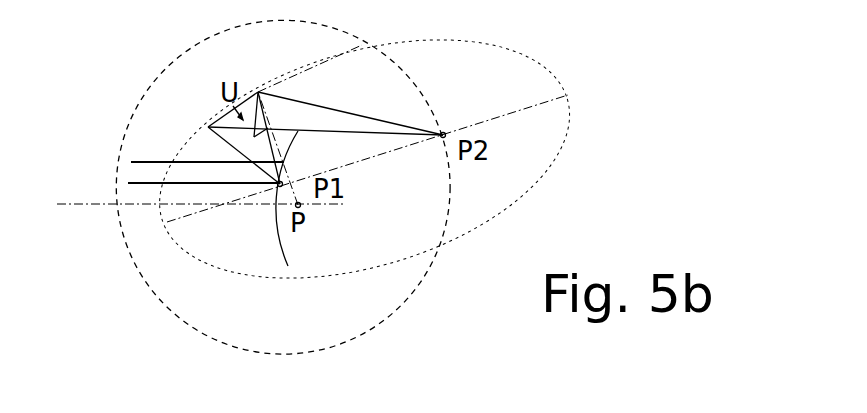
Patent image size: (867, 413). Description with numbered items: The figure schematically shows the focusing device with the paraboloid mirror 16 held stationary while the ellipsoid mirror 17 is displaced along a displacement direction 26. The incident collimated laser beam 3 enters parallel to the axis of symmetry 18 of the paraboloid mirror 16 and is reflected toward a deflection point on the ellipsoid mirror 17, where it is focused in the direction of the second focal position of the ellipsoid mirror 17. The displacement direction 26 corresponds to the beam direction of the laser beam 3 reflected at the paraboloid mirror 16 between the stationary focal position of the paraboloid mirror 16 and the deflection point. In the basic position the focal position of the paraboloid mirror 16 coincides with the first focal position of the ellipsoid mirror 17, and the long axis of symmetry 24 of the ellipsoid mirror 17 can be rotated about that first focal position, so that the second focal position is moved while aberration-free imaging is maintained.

The laser beam 3 is at (154, 162).
The paraboloid mirror 16 is at (281, 238).
The ellipsoid mirror 17 is at (216, 113).
The axis of symmetry 18 is at (73, 202).
The axis of symmetry 24 is at (541, 100).
The displacement direction 26 is at (267, 127).